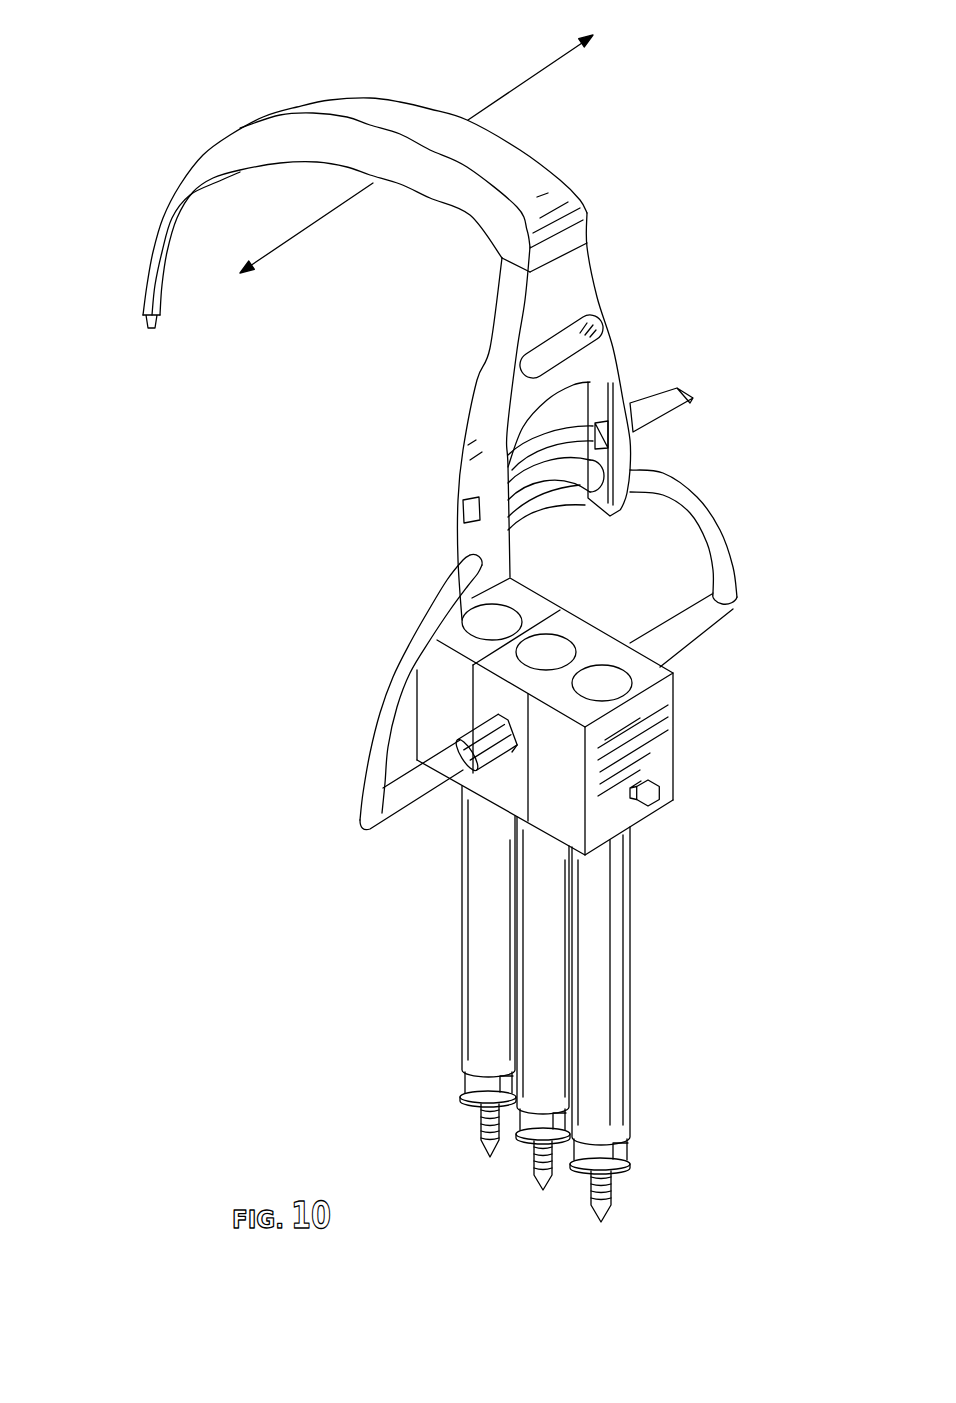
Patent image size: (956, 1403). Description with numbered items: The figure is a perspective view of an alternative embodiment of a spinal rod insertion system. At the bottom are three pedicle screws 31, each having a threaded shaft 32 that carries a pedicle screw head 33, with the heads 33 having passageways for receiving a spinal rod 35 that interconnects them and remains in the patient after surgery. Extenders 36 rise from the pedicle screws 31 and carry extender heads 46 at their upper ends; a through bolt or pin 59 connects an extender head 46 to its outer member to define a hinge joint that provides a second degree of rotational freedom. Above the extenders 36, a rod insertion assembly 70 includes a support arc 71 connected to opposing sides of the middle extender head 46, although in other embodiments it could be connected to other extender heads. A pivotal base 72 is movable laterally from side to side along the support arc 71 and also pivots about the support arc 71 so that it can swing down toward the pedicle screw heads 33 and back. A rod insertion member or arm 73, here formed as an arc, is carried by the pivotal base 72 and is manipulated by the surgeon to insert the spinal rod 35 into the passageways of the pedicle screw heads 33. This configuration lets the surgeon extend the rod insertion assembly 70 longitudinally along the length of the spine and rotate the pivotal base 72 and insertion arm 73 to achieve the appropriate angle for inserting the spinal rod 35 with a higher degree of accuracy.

The rod insertion assembly 70 is at (340, 431).
The rod insertion member or arm 73 is at (514, 173).
The spinal rod 35 is at (143, 338).
The pivotal base 72 is at (483, 354).
The extender head 46 is at (675, 753).
The through bolt or pin 59 is at (641, 797).
The support arc 71 is at (368, 748).
The extender 36 is at (445, 884).
The pedicle screw head 33 is at (462, 1082).
The threaded shaft 32 is at (477, 1116).
The pedicle screw 31 is at (508, 1166).